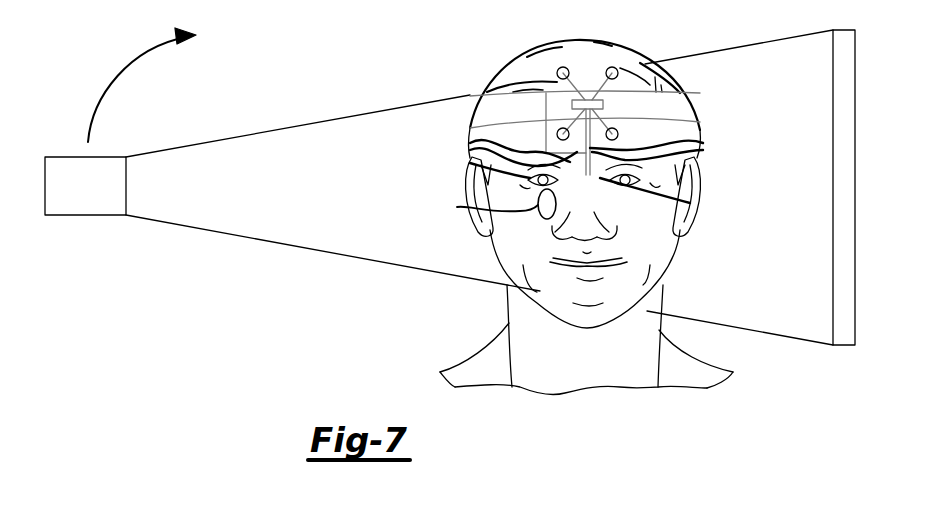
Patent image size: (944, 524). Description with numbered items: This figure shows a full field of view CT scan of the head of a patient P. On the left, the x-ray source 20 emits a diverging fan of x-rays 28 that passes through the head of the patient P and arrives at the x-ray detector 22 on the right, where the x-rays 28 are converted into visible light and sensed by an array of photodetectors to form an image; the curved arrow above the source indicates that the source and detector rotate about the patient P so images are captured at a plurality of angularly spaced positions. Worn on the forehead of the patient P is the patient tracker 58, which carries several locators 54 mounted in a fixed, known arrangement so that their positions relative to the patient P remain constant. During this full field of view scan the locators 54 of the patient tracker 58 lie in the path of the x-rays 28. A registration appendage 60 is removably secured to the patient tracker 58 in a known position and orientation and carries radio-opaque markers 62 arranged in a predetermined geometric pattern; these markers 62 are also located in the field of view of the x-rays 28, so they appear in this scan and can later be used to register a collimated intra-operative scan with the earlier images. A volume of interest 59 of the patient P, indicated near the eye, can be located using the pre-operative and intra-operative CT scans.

The x-ray source 20 is at (87, 215).
The x-ray detector 22 is at (844, 347).
The x-rays 28 is at (217, 167).
The locators 54 is at (617, 68).
The patient tracker 58 is at (600, 83).
The volume of interest 59 is at (457, 207).
The registration appendage 60 is at (690, 203).
The radio-opaque markers 62 is at (470, 143).
The patient P is at (676, 248).